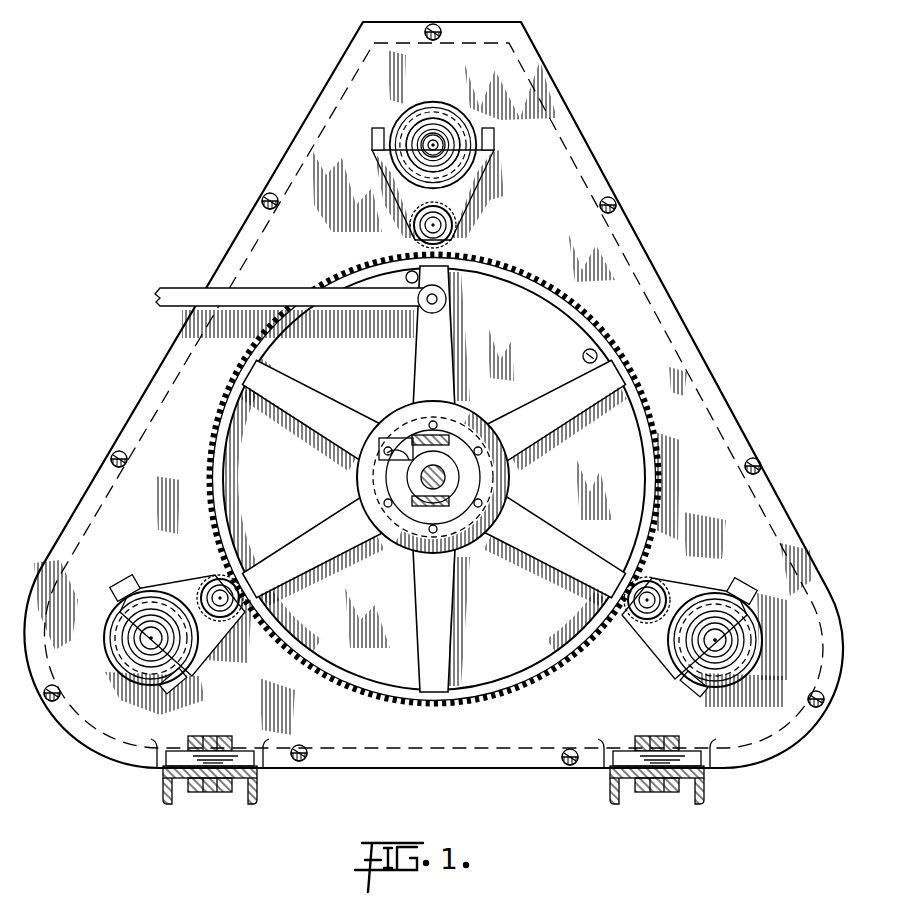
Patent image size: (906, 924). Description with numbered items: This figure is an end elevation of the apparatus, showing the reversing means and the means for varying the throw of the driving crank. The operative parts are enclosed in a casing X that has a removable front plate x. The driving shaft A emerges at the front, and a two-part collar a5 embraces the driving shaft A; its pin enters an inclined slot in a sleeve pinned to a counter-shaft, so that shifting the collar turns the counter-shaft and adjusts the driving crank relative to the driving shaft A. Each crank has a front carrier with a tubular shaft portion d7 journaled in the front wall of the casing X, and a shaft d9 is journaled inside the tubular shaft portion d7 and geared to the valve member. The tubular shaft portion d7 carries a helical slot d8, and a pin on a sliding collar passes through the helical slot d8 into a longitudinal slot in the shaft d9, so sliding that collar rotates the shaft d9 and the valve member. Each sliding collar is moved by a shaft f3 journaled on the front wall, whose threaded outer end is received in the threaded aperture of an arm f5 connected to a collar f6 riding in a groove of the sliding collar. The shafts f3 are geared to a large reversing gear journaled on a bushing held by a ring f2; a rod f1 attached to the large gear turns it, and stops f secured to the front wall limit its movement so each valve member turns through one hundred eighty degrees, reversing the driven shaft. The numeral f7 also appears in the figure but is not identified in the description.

The casing X is at (356, 74).
The removable front plate x is at (642, 255).
The stops f is at (458, 297).
The rod f1 is at (180, 288).
The ring f2 is at (370, 470).
The shaft f3 is at (460, 223).
The arm f5 is at (462, 197).
The collar f6 is at (466, 119).
The gear teeth f7 is at (650, 434).
The shaft portion d7 is at (412, 130).
The helical slot d8 is at (450, 146).
The shaft d9 is at (433, 138).
The collar a5 is at (385, 478).
The driving shaft A is at (447, 478).